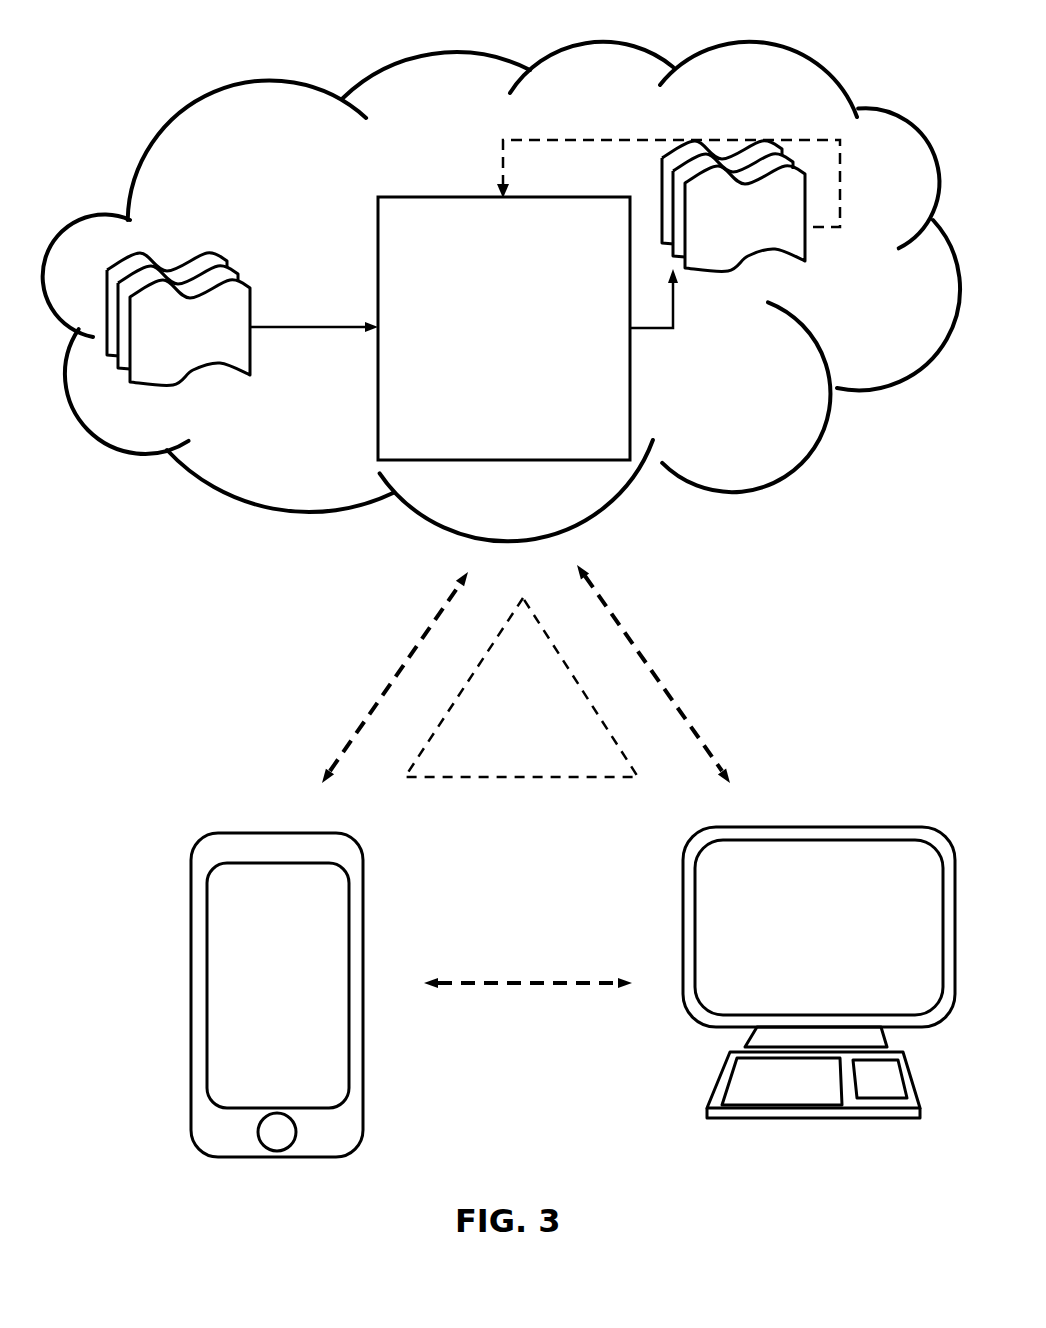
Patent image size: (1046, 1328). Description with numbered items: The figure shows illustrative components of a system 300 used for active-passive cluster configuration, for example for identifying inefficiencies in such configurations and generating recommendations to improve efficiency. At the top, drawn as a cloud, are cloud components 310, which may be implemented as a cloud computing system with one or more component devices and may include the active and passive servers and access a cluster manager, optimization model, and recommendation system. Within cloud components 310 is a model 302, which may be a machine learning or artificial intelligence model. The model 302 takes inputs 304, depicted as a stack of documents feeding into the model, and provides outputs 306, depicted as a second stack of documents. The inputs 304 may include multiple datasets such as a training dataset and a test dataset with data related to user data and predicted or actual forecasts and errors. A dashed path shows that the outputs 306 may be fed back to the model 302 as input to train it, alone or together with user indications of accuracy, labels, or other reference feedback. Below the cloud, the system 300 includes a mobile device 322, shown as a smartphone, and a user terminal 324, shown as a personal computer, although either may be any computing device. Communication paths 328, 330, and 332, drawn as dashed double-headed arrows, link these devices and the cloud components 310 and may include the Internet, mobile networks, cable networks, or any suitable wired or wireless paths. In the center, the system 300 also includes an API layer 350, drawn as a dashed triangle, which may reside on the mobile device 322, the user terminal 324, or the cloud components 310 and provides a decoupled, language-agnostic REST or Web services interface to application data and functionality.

The system 300 is at (520, 45).
The model 302 is at (483, 339).
The inputs 304 is at (197, 256).
The outputs 306 is at (787, 259).
The cloud components 310 is at (802, 92).
The mobile device 322 is at (264, 802).
The user terminal 324 is at (815, 806).
The communication path 328 is at (345, 652).
The communication path 330 is at (736, 624).
The communication path 332 is at (521, 942).
The API layer 350 is at (545, 713).